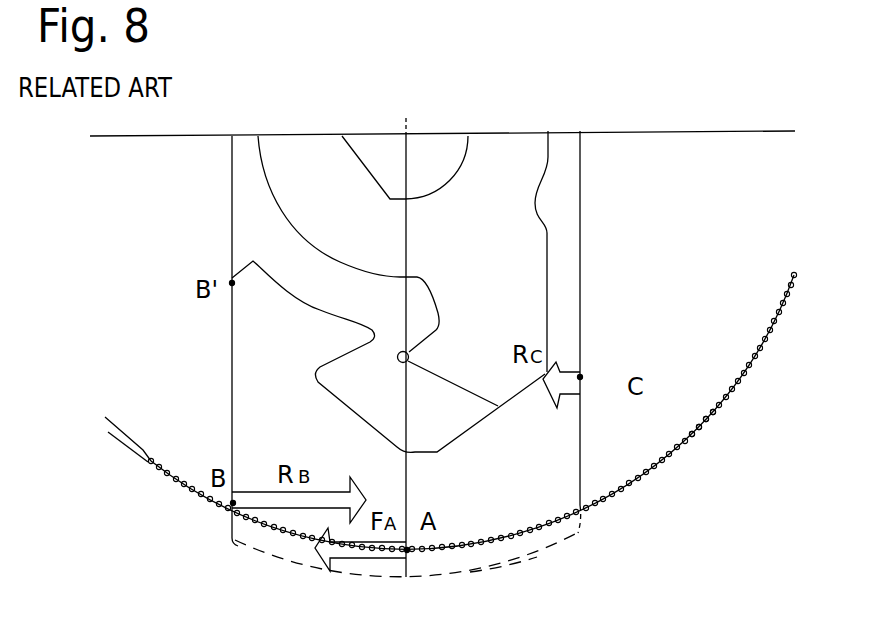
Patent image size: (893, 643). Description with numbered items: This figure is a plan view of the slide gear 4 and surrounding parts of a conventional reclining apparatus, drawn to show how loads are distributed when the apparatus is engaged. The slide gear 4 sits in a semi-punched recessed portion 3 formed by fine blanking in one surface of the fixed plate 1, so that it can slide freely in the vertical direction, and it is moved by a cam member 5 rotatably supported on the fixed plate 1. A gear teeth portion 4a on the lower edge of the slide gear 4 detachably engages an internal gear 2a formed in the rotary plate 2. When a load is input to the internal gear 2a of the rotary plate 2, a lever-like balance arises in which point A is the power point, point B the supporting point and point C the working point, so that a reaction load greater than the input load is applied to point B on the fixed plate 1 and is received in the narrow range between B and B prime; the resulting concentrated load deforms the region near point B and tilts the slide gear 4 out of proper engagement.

The fixed plate 1 is at (160, 330).
The rotary plate 2 is at (153, 544).
The internal gear 2a is at (690, 442).
The recessed portion 3 is at (563, 194).
The slide gear 4 is at (567, 445).
The gear teeth portion 4a is at (490, 540).
The cam member 5 is at (502, 152).